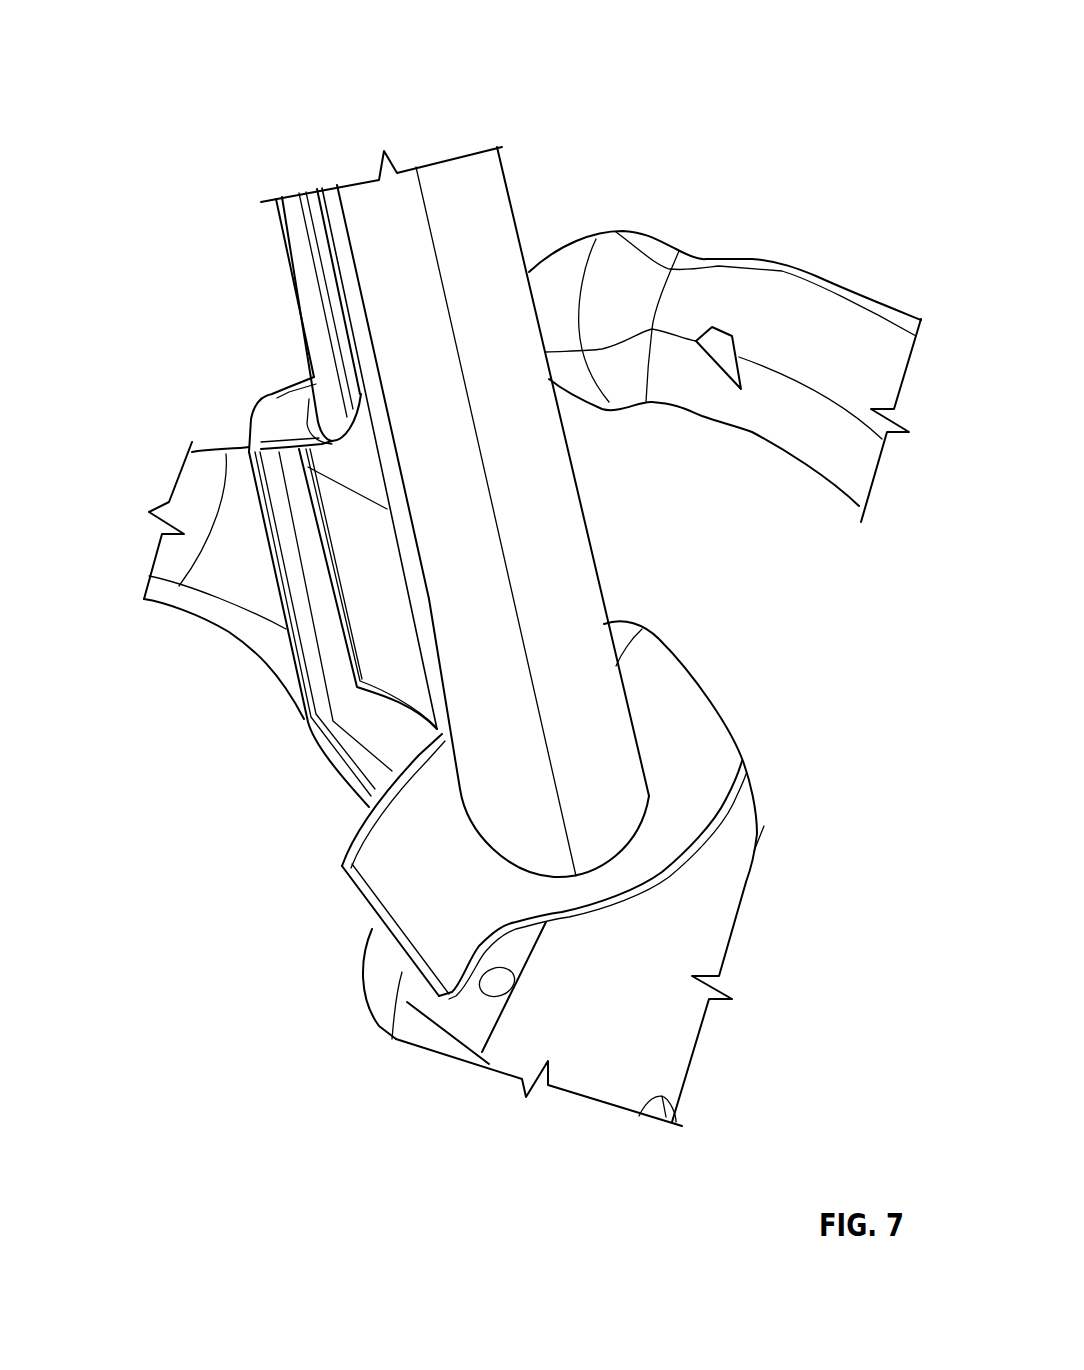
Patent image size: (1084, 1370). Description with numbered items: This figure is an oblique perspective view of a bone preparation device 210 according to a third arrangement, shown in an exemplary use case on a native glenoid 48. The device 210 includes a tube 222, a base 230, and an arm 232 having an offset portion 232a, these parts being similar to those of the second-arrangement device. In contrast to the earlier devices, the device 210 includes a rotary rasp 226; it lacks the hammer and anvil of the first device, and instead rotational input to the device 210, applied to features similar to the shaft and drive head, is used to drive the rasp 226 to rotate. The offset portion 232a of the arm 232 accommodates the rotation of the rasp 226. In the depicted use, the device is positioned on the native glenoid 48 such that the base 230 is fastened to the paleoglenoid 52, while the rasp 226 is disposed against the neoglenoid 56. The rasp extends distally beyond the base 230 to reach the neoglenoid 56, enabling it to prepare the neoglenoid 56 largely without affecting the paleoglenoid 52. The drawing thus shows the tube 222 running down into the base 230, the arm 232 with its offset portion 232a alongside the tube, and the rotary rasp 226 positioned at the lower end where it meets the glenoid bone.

The bone preparation device 210 is at (177, 42).
The tube 222 is at (567, 448).
The arm 232 is at (290, 260).
The offset portion 232a is at (287, 685).
The base 230 is at (367, 807).
The rotary rasp 226 is at (743, 762).
The native glenoid 48 is at (710, 1090).
The paleoglenoid 52 is at (437, 1035).
The neoglenoid 56 is at (627, 1087).